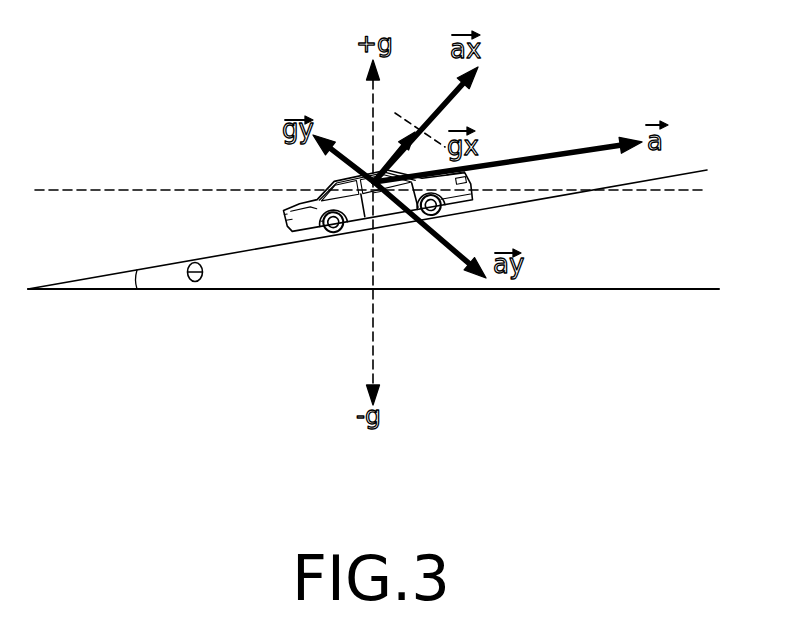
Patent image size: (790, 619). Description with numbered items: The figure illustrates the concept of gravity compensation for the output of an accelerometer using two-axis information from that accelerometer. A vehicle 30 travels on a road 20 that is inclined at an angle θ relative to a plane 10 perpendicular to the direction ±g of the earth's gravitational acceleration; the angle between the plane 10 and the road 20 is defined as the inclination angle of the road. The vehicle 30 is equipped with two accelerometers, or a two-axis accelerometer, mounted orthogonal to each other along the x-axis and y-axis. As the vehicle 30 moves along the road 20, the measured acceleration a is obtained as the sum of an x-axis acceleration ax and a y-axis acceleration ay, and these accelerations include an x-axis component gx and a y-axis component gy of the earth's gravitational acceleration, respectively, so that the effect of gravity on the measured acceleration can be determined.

The plane perpendicular to the direction of gravitational acceleration 10 is at (709, 289).
The road 20 is at (707, 170).
The vehicle 30 is at (290, 214).